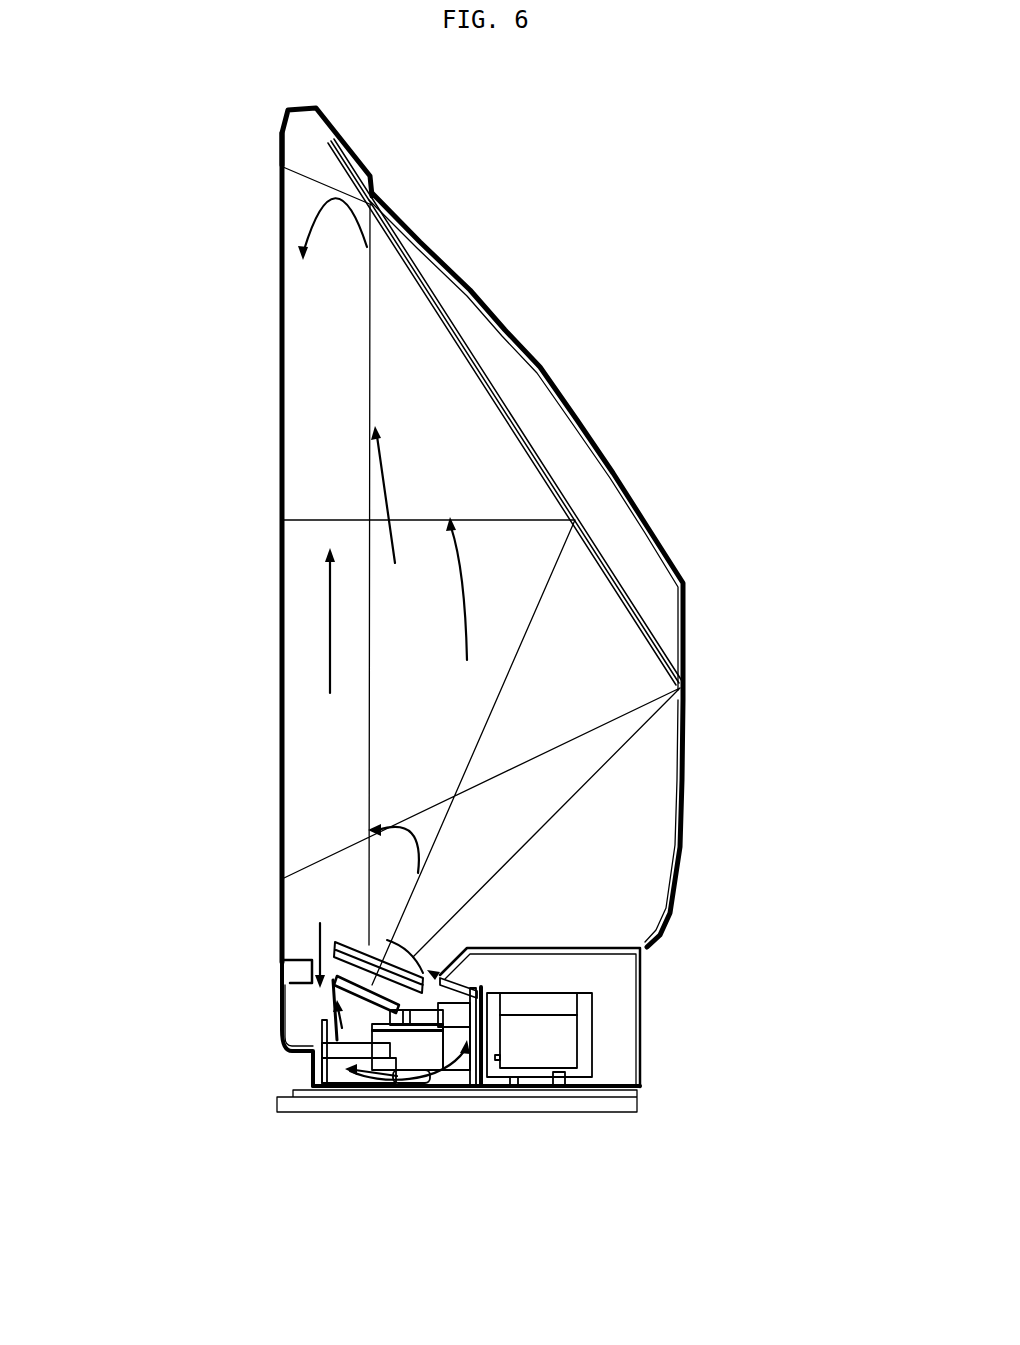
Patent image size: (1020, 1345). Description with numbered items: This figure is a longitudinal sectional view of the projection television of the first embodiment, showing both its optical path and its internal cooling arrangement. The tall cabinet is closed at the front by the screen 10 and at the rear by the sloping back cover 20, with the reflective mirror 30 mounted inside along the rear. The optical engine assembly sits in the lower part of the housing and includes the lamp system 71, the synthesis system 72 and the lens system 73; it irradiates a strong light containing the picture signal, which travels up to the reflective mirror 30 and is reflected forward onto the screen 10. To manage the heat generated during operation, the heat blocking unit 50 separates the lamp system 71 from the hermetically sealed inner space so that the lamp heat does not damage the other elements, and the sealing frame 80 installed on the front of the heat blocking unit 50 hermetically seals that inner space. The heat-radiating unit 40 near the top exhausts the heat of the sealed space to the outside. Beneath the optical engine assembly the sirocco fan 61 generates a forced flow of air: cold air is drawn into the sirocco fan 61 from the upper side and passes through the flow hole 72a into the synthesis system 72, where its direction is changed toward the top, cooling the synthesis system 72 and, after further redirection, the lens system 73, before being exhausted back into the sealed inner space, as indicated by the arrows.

The screen 10 is at (283, 573).
The back cover 20 is at (540, 368).
The reflective mirror 30 is at (577, 513).
The heat-radiating unit 40 is at (355, 148).
The heat blocking unit 50 is at (580, 947).
The sirocco fan 61 is at (359, 1090).
The lamp system 71 is at (553, 1037).
The synthesis system 72 is at (467, 1012).
The flow hole 72a is at (412, 1070).
The lens system 73 is at (354, 943).
The sealing frame 80 is at (285, 1040).